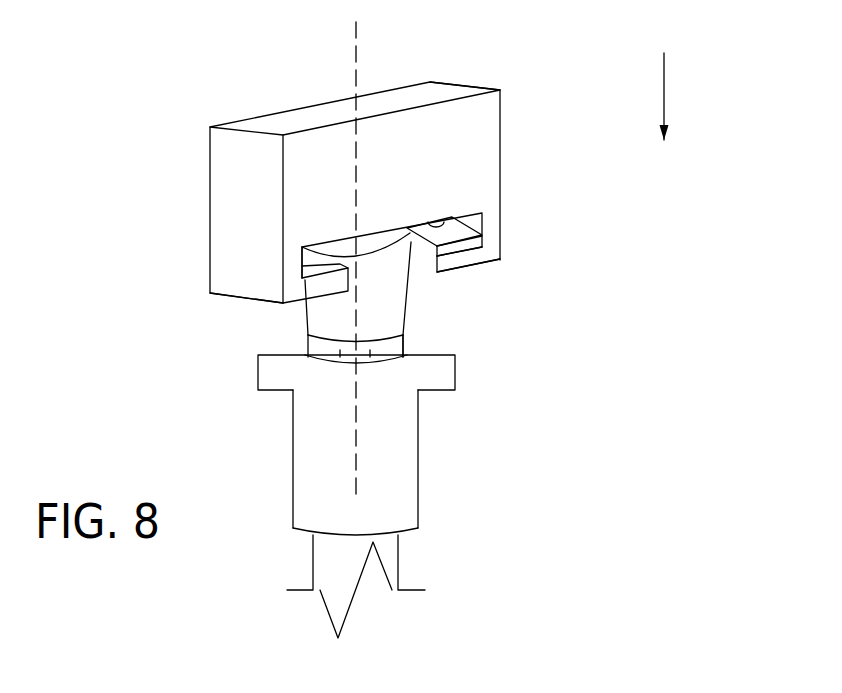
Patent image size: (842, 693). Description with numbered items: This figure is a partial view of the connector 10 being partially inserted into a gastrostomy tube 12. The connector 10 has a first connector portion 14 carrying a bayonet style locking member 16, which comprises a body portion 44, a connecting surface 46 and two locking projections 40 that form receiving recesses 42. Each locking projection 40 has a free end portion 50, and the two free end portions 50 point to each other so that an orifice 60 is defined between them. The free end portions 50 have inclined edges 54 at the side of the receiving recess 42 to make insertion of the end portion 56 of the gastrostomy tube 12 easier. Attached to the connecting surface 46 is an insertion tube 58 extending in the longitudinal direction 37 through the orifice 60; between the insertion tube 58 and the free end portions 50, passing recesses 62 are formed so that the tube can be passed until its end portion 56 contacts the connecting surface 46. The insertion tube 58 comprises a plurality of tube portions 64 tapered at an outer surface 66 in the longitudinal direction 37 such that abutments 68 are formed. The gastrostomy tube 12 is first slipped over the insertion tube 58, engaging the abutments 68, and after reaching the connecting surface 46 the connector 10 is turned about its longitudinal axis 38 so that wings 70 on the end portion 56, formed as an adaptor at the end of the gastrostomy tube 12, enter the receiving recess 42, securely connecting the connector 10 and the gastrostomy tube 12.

The connector 10 is at (485, 72).
The gastrostomy tube 12 is at (399, 562).
The first connector portion 14 is at (165, 120).
The bayonet style locking member 16 is at (399, 181).
The longitudinal direction 37 is at (664, 75).
The longitudinal axis 38 is at (357, 62).
The locking projection 40 is at (292, 266).
The receiving recess 42 is at (463, 220).
The body portion 44 is at (302, 115).
The connecting surface 46 is at (423, 222).
The free end portion 50 is at (472, 257).
The inclined edge 54 is at (317, 268).
The end portion 56 is at (419, 445).
The insertion tube 58 is at (307, 347).
The orifice 60 is at (422, 253).
The passing recess 62 is at (421, 262).
The tube portion 64 is at (405, 347).
The outer surface 66 is at (368, 352).
The abutment 68 is at (346, 348).
The wing 70 is at (456, 373).